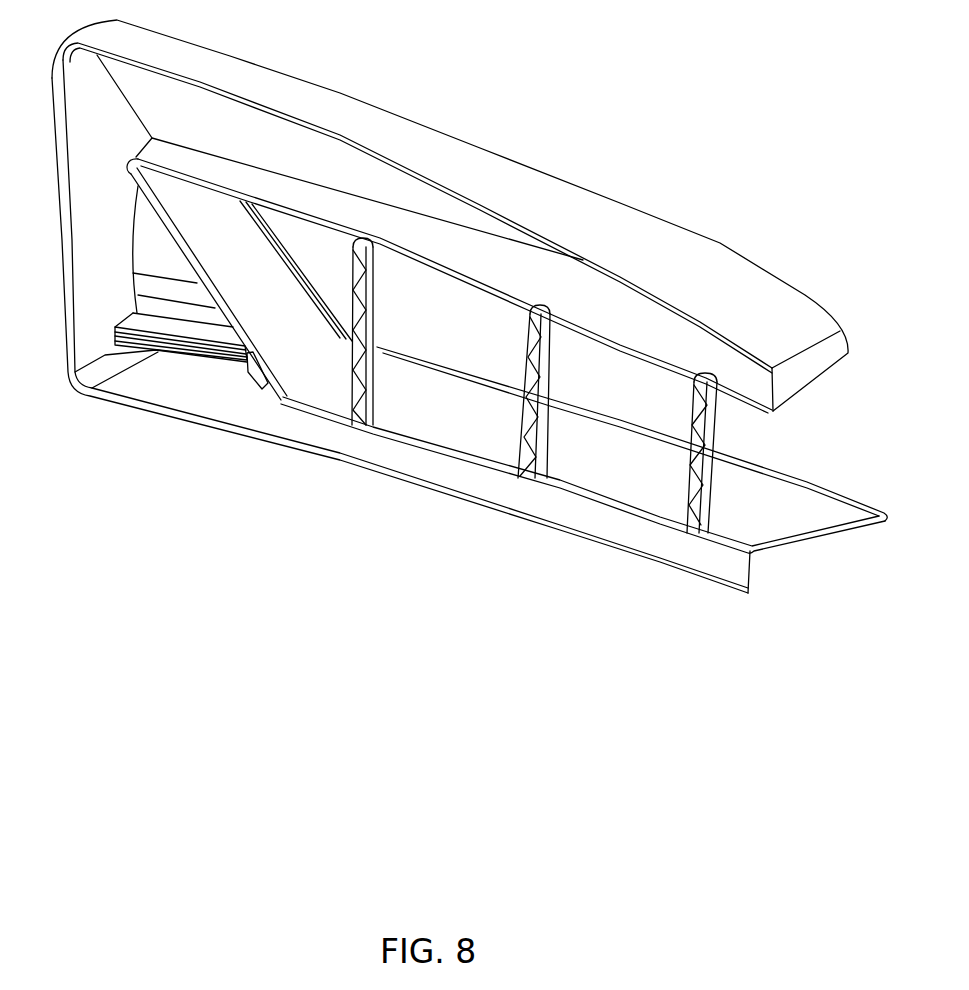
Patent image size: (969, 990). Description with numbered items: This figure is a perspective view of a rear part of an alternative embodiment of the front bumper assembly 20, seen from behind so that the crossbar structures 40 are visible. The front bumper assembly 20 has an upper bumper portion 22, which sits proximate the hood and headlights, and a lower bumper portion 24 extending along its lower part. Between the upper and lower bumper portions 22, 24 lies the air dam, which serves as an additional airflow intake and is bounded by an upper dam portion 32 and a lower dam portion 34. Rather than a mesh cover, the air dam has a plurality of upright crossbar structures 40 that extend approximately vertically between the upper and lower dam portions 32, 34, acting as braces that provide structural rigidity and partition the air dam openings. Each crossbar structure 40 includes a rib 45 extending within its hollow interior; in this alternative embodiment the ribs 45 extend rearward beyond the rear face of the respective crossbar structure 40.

The front bumper assembly 20 is at (657, 217).
The upper bumper portion 22 is at (720, 332).
The lower bumper portion 24 is at (823, 486).
The upper dam portion 32 is at (604, 345).
The lower dam portion 34 is at (613, 463).
The crossbar structure 40 is at (353, 383).
The rib 45 is at (365, 398).